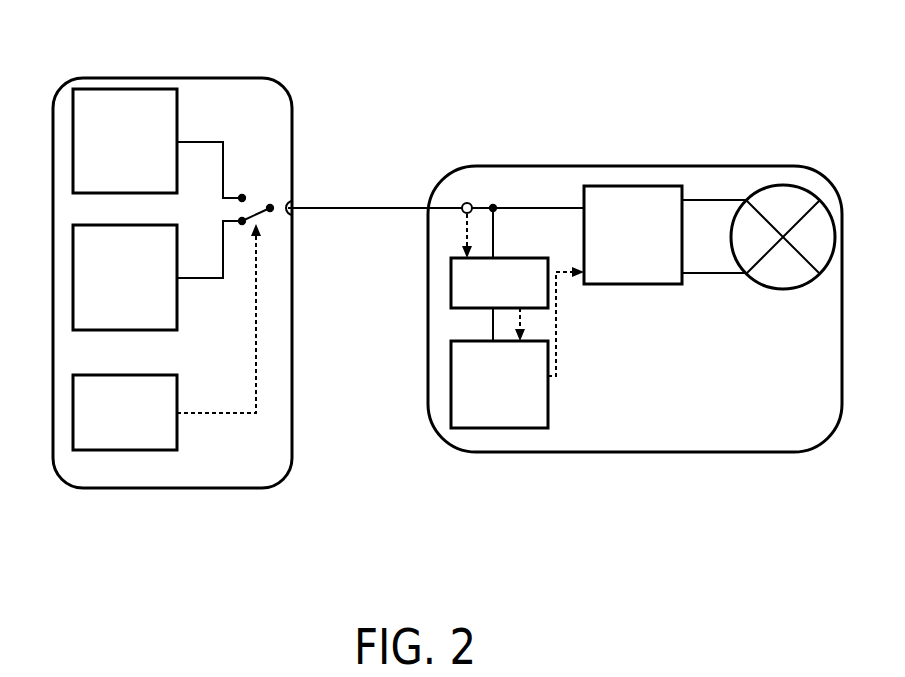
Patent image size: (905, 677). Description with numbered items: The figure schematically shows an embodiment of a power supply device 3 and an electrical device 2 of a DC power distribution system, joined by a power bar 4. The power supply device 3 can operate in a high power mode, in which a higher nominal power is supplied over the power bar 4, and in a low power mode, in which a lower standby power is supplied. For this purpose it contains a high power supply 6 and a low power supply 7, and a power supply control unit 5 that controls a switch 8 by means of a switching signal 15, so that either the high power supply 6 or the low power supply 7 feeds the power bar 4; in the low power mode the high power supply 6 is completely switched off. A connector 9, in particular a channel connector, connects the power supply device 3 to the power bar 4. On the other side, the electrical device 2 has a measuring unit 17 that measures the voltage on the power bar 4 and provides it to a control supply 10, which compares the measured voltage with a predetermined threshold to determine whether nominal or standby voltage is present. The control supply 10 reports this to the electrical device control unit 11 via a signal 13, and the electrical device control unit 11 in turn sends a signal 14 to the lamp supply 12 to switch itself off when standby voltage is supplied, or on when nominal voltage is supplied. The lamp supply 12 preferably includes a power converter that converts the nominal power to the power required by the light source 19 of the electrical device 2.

The electrical device 2 is at (745, 166).
The power supply device 3 is at (106, 78).
The power bar 4 is at (388, 208).
The power supply control unit 5 is at (133, 450).
The high power supply 6 is at (163, 89).
The low power supply 7 is at (73, 312).
The switch 8 is at (278, 232).
The connector 9 is at (304, 190).
The control supply 10 is at (451, 283).
The electrical device control unit 11 is at (520, 428).
The lamp supply 12 is at (617, 186).
The signal 13 is at (522, 316).
The signal 14 is at (558, 355).
The switching signal 15 is at (228, 413).
The measuring unit 17 is at (470, 203).
The light source 19 is at (797, 187).